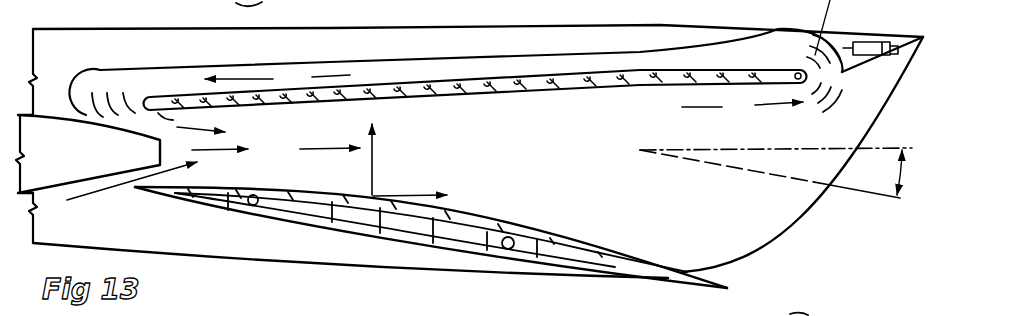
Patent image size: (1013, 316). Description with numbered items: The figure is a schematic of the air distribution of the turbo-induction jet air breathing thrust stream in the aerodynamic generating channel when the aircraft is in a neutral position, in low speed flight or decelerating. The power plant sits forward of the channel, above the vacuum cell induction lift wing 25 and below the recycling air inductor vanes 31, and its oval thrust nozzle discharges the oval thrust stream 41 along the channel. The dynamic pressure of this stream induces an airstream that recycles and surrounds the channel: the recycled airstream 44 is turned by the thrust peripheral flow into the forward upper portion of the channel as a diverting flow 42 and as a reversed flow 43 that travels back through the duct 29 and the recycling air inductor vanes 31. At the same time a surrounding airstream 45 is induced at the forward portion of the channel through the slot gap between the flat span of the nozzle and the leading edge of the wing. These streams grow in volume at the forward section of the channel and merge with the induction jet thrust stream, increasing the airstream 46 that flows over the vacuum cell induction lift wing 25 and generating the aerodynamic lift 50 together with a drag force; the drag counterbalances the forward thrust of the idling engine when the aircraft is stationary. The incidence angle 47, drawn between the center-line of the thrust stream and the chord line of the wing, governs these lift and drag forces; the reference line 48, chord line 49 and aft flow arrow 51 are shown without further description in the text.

The vacuum cell induction lift wing 25 is at (636, 279).
The duct 29 is at (408, 72).
The recycling air inductor vanes 31 is at (128, 95).
The oval thrust stream 41 is at (207, 151).
The diverting flow 42 is at (742, 107).
The reversed flow 43 is at (277, 79).
The recycled airstream 44 is at (187, 125).
The surrounding airstream 45 is at (122, 187).
The airstream 46 is at (317, 152).
The incidence angle 47 is at (902, 177).
The reference axis 48 is at (786, 149).
The deflected flow line 49 is at (781, 185).
The aerodynamic lift 50 is at (387, 152).
The aft flow arrow 51 is at (424, 197).